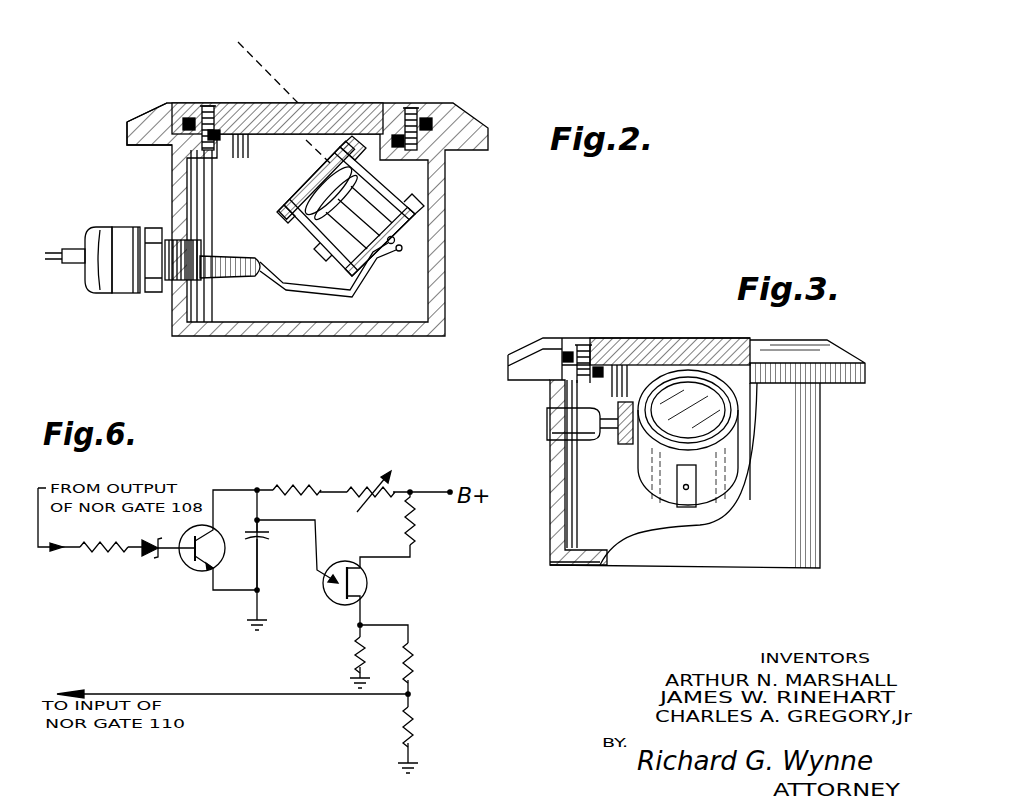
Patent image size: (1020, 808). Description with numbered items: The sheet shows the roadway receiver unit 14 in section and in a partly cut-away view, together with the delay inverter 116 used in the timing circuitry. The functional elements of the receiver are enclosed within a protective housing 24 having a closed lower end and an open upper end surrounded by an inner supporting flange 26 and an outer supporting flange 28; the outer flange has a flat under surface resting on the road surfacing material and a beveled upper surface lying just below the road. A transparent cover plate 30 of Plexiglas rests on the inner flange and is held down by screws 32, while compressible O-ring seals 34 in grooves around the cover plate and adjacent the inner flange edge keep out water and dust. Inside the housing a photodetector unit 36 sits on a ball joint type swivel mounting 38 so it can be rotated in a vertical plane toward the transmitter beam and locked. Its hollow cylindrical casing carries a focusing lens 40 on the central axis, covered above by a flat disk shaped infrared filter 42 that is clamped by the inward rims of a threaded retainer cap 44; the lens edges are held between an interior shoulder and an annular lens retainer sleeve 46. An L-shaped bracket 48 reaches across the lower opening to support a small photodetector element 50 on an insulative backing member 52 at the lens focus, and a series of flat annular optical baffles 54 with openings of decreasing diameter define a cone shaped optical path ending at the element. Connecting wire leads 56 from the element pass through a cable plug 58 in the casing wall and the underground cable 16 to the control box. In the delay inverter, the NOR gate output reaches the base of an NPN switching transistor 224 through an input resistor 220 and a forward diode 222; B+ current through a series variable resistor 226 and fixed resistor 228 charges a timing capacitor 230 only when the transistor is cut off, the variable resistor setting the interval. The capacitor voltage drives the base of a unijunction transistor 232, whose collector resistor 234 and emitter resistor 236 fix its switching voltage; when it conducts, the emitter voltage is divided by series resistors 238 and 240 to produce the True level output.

In FIG. 2, the receiver unit 14 is at (462, 244).
In FIG. 3, the receiver unit 14 is at (695, 574).
In FIG. 2, the underground cable 16 is at (82, 248).
In FIG. 2, the protective housing 24 is at (445, 183).
In FIG. 3, the protective housing 24 is at (821, 515).
In FIG. 2, the inner supporting flange 26 is at (205, 152).
In FIG. 2, the outer supporting flange 28 is at (127, 131).
In FIG. 3, the outer supporting flange 28 is at (507, 366).
In FIG. 2, the transparent cover plate 30 is at (350, 90).
In FIG. 2, the screws 32 is at (208, 106).
In FIG. 3, the screws 32 is at (578, 366).
In FIG. 2, the compressible O-ring seals 34 is at (183, 120).
In FIG. 3, the compressible O-ring seals 34 is at (600, 364).
In FIG. 3, the photodetector unit 36 is at (640, 472).
In FIG. 3, the ball joint type swivel mounting 38 is at (625, 446).
In FIG. 2, the focusing lens 40 is at (292, 197).
In FIG. 2, the infrared filter 42 is at (318, 182).
In FIG. 3, the infrared filter 42 is at (712, 404).
In FIG. 2, the retainer cap 44 is at (357, 137).
In FIG. 3, the retainer cap 44 is at (722, 448).
In FIG. 2, the annular lens retainer sleeve 46 is at (287, 213).
In FIG. 2, the L-shaped bracket 48 is at (322, 266).
In FIG. 2, the photodetector element 50 is at (390, 253).
In FIG. 2, the insulative backing member 52 is at (397, 240).
In FIG. 2, the optical baffles 54 is at (394, 192).
In FIG. 2, the connecting wire leads 56 is at (313, 293).
In FIG. 2, the cable plug 58 is at (199, 288).
In FIG. 6, the delay inverter 116 is at (198, 650).
In FIG. 6, the input resistor 220 is at (103, 560).
In FIG. 6, the diode 222 is at (150, 562).
In FIG. 6, the NPN switching transistor 224 is at (186, 564).
In FIG. 6, the variable resistor 226 is at (350, 488).
In FIG. 6, the fixed resistor 228 is at (285, 485).
In FIG. 6, the timing capacitor 230 is at (272, 528).
In FIG. 6, the unijunction transistor 232 is at (368, 583).
In FIG. 6, the low value resistor 234 is at (414, 541).
In FIG. 6, the emitter resistor 236 is at (352, 656).
In FIG. 6, the resistor 238 is at (414, 646).
In FIG. 6, the resistor 240 is at (414, 711).